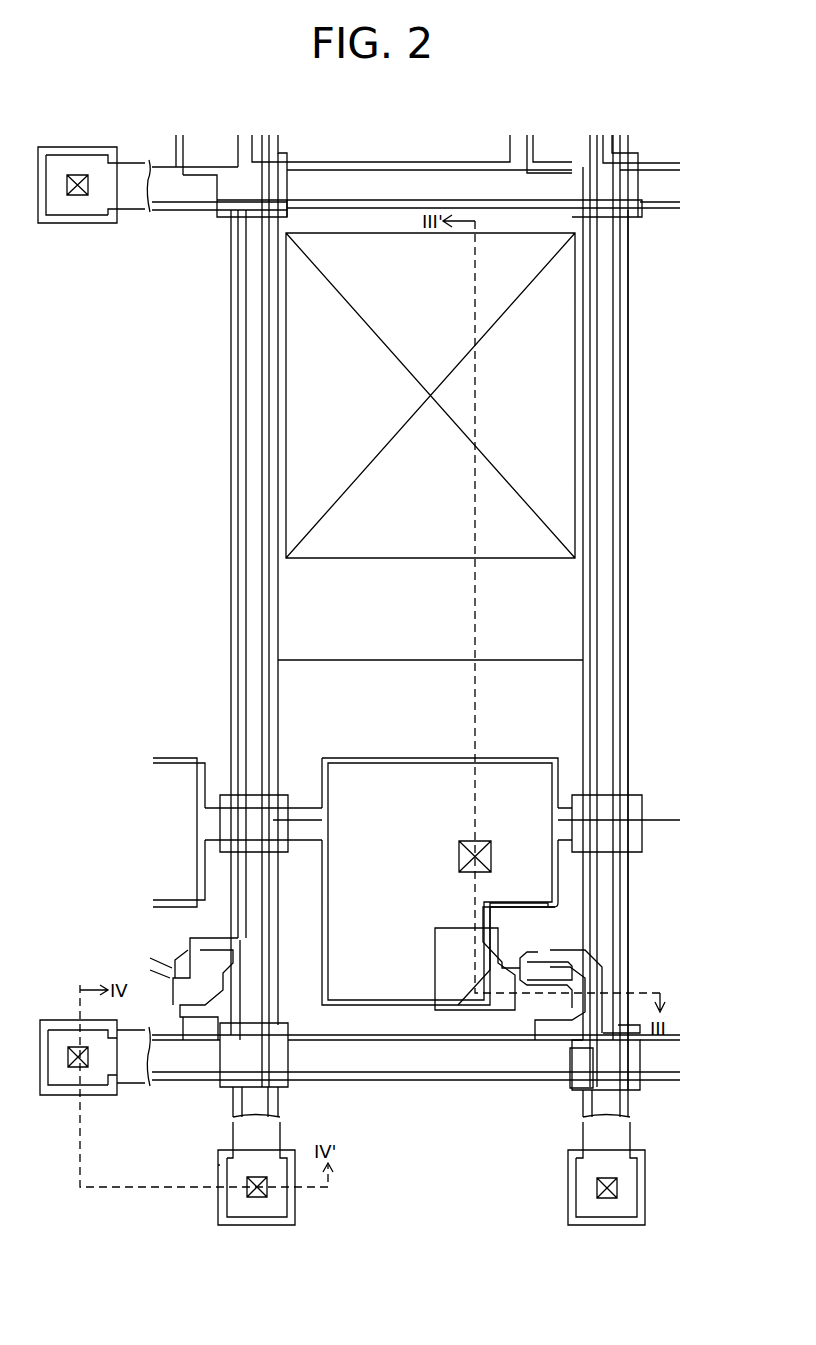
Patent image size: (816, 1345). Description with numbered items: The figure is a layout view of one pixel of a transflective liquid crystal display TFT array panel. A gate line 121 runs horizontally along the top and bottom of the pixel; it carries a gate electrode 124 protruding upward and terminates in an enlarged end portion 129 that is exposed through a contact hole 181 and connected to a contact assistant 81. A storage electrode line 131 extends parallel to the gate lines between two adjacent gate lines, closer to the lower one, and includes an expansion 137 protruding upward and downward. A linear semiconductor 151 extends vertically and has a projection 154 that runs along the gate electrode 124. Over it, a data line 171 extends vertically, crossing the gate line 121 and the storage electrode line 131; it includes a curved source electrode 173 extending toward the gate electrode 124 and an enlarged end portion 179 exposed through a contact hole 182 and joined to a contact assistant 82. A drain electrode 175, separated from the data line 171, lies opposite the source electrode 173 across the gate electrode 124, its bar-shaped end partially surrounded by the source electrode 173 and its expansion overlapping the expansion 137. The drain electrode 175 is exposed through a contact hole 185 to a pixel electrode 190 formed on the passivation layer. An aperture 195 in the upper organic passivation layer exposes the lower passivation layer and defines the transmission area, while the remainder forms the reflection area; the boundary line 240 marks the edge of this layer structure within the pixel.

The gate line 121 is at (362, 1037).
The gate electrode 124 is at (530, 927).
The end portion of gate line 129 is at (72, 575).
The storage electrode line 131 is at (642, 805).
The expansion of storage electrode line 137 is at (505, 881).
The linear semiconductor 151 is at (599, 482).
The projection of semiconductor 154 is at (574, 968).
The data line 171 is at (583, 540).
The source electrode 173 is at (572, 940).
The drain electrode 175 is at (527, 1013).
The end portion of data line 179 is at (292, 1200).
The contact hole 181 is at (73, 1067).
The contact hole 182 is at (250, 1193).
The contact hole 185 is at (491, 860).
The pixel electrode 190 is at (592, 428).
The aperture 195 is at (575, 367).
The boundary of organic layer 240 is at (575, 660).
The contact assistant 81 is at (105, 1095).
The contact assistant 82 is at (217, 1170).